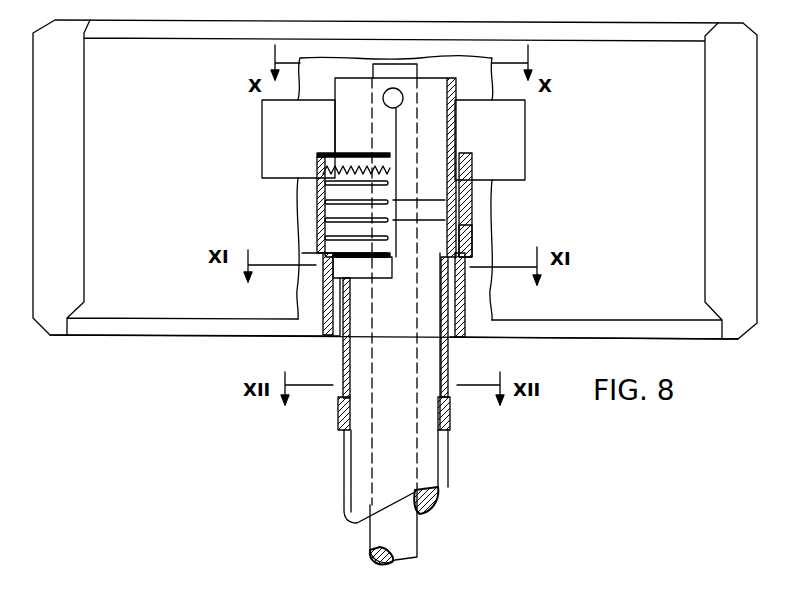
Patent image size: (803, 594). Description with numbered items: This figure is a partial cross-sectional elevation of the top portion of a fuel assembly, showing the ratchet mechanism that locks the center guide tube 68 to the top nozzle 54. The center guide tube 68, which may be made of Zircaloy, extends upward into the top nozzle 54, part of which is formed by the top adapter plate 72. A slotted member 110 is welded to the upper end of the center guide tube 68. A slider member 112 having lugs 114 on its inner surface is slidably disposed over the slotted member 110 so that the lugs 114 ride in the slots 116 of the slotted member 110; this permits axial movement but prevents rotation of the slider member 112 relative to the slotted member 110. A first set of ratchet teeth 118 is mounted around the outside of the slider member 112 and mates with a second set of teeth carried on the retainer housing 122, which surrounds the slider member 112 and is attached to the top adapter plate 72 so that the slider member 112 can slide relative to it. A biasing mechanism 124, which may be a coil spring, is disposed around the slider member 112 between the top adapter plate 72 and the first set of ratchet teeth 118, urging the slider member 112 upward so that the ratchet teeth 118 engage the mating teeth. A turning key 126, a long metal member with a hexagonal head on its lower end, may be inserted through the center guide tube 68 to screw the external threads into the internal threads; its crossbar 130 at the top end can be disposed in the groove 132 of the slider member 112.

The top nozzle 54 is at (622, 143).
The crossbar 130 is at (400, 88).
The groove 132 is at (385, 92).
The slider member 112 is at (447, 123).
The first set of ratchet teeth 118 is at (322, 172).
The retainer housing 122 is at (313, 213).
The biasing mechanism 124 is at (470, 233).
The top adapter plate 72 is at (323, 292).
The lugs 114 is at (452, 272).
The slots 116 is at (342, 362).
The slotted member 110 is at (337, 430).
The center guide tube 68 is at (433, 487).
The turning key 126 is at (408, 553).